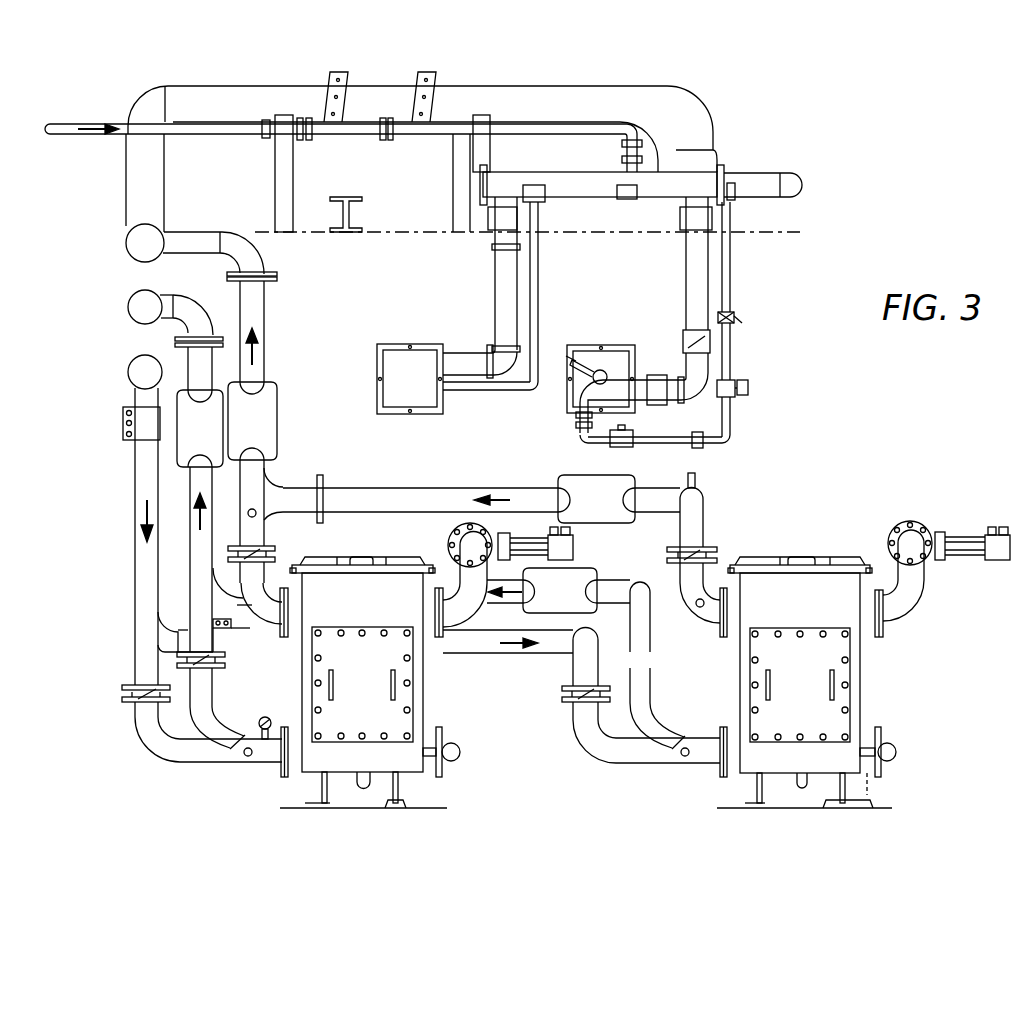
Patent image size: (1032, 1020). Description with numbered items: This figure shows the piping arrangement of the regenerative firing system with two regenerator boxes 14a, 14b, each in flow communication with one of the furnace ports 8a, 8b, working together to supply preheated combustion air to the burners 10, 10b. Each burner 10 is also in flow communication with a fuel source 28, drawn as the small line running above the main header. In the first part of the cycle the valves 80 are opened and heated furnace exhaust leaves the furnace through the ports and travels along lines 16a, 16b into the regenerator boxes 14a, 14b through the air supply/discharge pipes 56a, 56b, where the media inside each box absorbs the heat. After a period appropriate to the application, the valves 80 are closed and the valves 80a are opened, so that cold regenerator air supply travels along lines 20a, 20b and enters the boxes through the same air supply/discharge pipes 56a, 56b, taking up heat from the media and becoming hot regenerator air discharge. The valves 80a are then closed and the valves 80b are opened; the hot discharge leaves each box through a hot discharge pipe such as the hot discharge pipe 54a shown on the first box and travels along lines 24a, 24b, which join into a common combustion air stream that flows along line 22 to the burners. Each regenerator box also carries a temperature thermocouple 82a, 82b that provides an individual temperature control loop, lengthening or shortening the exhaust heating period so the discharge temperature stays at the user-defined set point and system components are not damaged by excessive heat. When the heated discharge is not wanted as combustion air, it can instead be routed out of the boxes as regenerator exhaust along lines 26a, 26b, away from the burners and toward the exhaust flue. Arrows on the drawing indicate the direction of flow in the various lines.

The combustion air stream line 22 is at (216, 92).
The fuel source 28 is at (83, 138).
The burner 10 is at (410, 379).
The control unit 10b is at (671, 390).
The return pipe 26a is at (128, 305).
The return pipe 26b is at (655, 718).
The cold regenerator air supply line 20a is at (130, 375).
The cold regenerator air supply line 20b is at (553, 655).
The hot regenerator air discharge line 24a is at (267, 543).
The hot regenerator air discharge line 24b is at (400, 488).
The inlet 8a is at (452, 542).
The inlet 8b is at (912, 525).
The valve 80 is at (574, 548).
The valve 80a is at (250, 615).
The valve 80b is at (714, 556).
The cover 54a is at (310, 616).
The regenerator box 14a is at (361, 681).
The regenerator box 14b is at (801, 672).
The heated furnace exhaust line 16a is at (466, 610).
The heated furnace exhaust line 16b is at (925, 597).
The drain valve 82a is at (460, 752).
The drain valve 82b is at (896, 752).
The air supply/discharge pipe 56a is at (295, 778).
The air supply/discharge pipe 56b is at (722, 780).